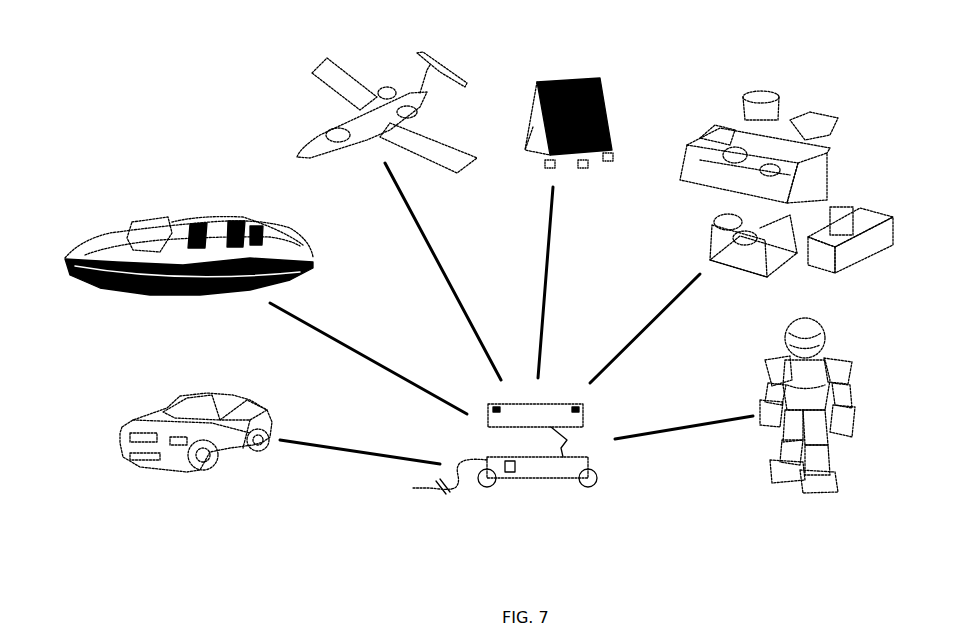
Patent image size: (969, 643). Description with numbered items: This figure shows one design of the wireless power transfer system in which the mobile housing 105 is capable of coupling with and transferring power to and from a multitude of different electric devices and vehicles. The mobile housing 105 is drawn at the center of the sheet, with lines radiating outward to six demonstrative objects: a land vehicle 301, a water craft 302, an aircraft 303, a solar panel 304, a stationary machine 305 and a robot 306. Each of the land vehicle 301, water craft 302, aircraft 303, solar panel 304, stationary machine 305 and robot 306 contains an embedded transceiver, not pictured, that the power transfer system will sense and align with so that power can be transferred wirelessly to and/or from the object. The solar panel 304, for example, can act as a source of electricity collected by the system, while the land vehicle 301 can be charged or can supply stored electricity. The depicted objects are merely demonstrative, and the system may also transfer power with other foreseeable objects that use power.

The mobile housing 105 is at (568, 475).
The land vehicle 301 is at (167, 407).
The water craft 302 is at (117, 252).
The aircraft 303 is at (378, 100).
The solar panel 304 is at (604, 93).
The stationary machine 305 is at (808, 177).
The robot 306 is at (850, 370).